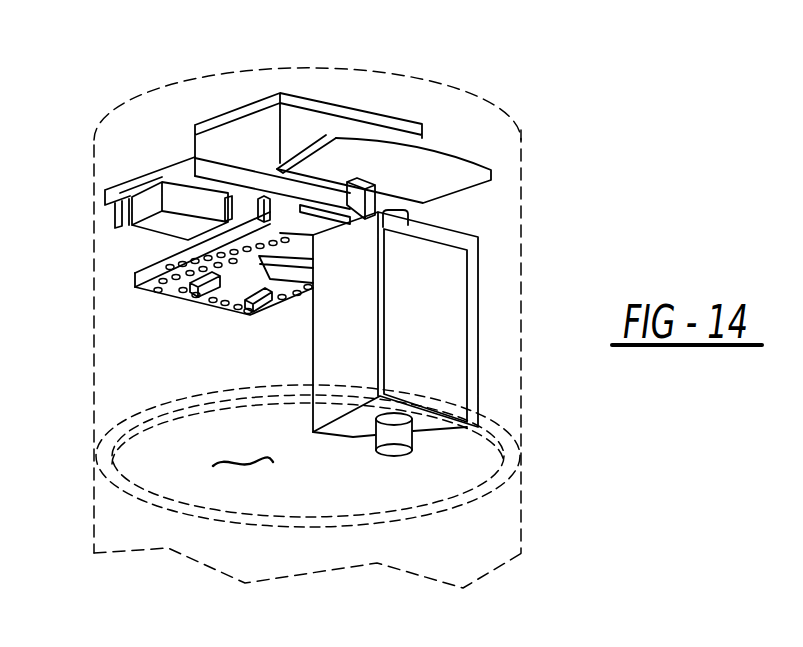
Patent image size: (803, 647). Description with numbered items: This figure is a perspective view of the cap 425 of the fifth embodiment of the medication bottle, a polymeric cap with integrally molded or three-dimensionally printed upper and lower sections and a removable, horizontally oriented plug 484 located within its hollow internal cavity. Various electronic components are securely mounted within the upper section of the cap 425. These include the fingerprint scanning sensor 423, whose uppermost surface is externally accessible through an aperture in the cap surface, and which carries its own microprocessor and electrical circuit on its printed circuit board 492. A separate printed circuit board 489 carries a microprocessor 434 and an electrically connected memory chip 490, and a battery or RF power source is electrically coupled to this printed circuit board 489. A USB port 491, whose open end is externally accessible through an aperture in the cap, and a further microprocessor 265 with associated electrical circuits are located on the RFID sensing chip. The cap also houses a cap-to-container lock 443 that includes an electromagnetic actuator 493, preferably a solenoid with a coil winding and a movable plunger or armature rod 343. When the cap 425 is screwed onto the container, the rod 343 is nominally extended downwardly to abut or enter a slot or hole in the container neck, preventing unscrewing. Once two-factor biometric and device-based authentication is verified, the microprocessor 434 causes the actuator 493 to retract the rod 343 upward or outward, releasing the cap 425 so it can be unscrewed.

The fingerprint scanning sensor 423 is at (332, 110).
The printed circuit board 492 is at (243, 207).
The microprocessor 265 is at (178, 198).
The USB port 491 is at (147, 200).
The printed circuit board 489 is at (150, 272).
The memory chip 490 is at (173, 292).
The microprocessor 434 is at (300, 268).
The electromagnetic actuator 493 is at (356, 352).
The armature rod 343 is at (398, 435).
The cap-to-container lock 443 is at (466, 464).
The plug 484 is at (175, 457).
The cap 425 is at (243, 446).